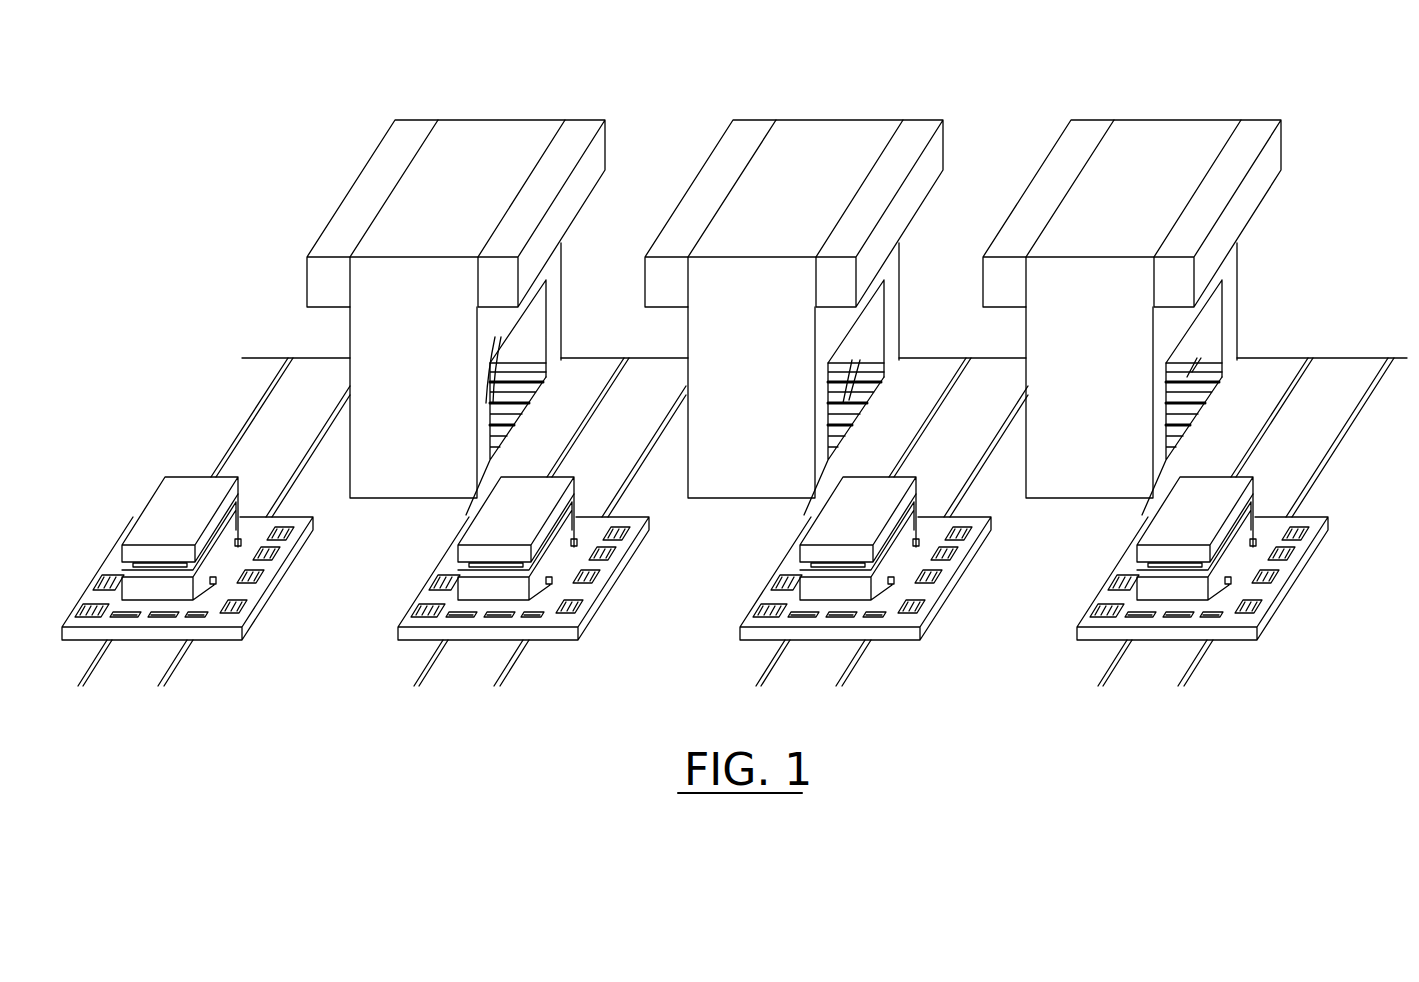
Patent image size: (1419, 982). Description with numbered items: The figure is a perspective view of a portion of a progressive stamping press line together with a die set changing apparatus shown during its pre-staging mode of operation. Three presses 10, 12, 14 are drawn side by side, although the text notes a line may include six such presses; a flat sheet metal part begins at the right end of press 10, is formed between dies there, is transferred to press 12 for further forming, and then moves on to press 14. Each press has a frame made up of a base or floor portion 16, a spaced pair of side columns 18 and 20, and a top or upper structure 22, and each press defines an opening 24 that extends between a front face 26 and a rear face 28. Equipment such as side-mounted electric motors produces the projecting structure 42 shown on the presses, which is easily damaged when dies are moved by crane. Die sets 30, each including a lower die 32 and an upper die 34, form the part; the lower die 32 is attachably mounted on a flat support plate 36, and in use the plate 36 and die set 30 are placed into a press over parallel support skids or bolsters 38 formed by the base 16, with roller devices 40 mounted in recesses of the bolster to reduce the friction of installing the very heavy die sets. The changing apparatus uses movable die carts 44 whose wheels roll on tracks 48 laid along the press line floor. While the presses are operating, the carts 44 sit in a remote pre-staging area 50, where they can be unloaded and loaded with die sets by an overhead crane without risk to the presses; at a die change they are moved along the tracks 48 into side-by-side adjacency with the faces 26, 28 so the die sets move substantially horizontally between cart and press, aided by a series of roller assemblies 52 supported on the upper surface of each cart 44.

The press 10 is at (1190, 127).
The press 12 is at (865, 125).
The press 14 is at (535, 128).
The base or floor portion 16 is at (521, 420).
The side column 18 is at (398, 415).
The side column 20 is at (564, 251).
The top or upper structure 22 is at (483, 178).
The opening 24 is at (538, 307).
The front face 26 is at (478, 431).
The rear face 28 is at (350, 325).
The die set 30 is at (164, 476).
The lower die 32 is at (243, 510).
The upper die 34 is at (238, 507).
The support plate 36 is at (208, 602).
The support skids or bolsters 38 is at (506, 385).
The roller devices 40 is at (848, 356).
The projecting structure 42 is at (347, 200).
The die cart 44 is at (298, 558).
The tracks 48 is at (326, 384).
The pre-staging area 50 is at (330, 612).
The roller assemblies 52 is at (246, 612).